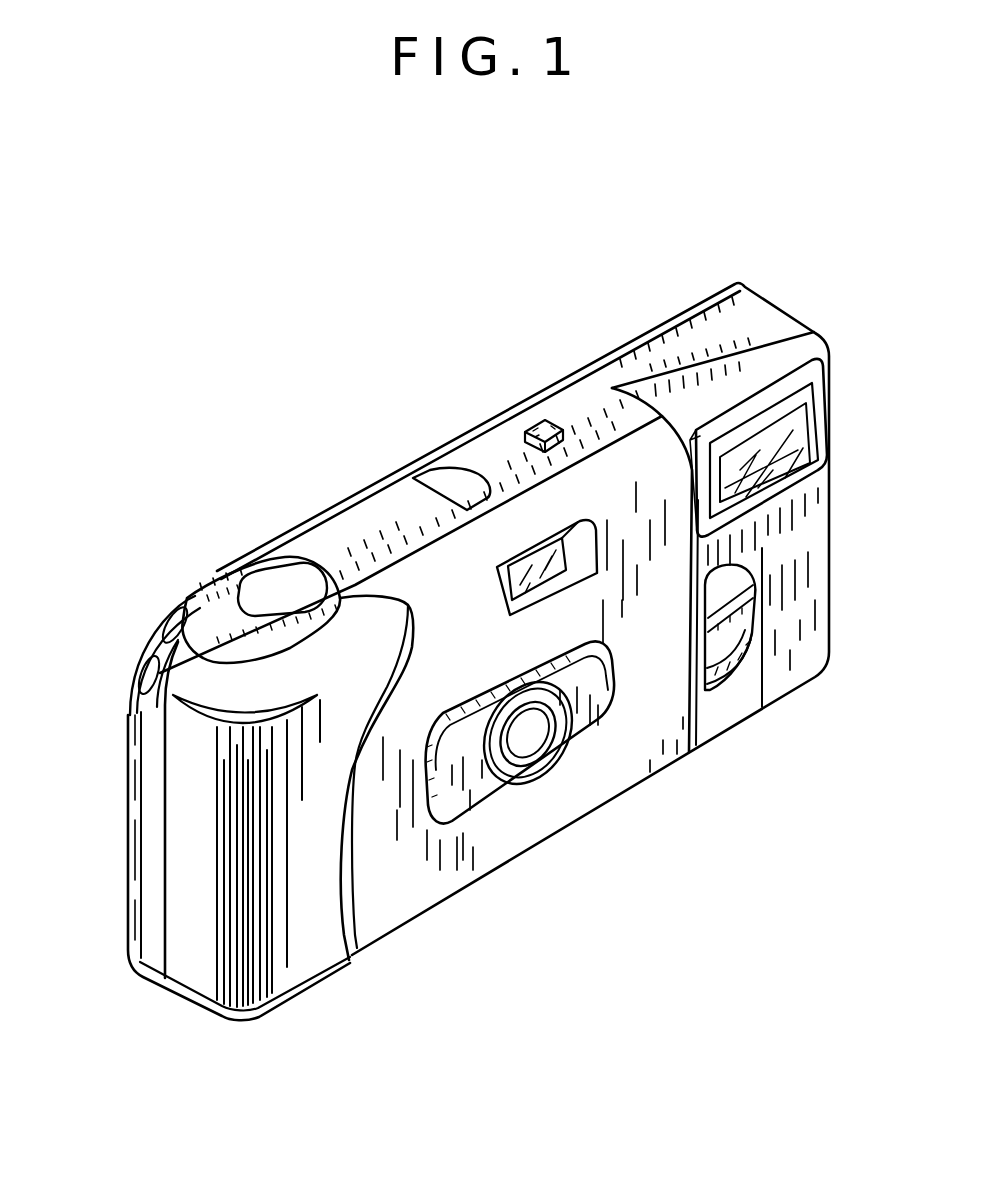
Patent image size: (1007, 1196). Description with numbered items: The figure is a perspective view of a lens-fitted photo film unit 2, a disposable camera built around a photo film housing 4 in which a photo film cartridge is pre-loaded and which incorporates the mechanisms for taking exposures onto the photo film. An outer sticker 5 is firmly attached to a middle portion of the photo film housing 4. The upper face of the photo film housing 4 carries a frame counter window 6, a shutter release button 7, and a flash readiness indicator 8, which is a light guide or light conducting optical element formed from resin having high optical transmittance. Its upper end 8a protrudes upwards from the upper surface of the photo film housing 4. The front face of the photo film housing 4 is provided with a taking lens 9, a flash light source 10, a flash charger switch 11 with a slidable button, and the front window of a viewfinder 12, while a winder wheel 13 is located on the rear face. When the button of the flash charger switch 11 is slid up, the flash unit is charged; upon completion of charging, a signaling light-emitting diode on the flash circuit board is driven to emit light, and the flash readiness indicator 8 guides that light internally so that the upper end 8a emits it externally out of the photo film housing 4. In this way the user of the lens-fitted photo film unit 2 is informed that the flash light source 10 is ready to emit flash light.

The lens-fitted photo film unit 2 is at (663, 320).
The photo film housing 4 is at (148, 762).
The outer sticker 5 is at (400, 898).
The frame counter window 6 is at (438, 470).
The shutter release button 7 is at (282, 582).
The flash readiness indicator 8 is at (530, 428).
The upper end of the flash readiness indicator 8a is at (549, 416).
The taking lens 9 is at (517, 753).
The flash light source 10 is at (812, 420).
The flash charger switch 11 is at (752, 595).
The viewfinder 12 is at (500, 600).
The winder wheel 13 is at (165, 648).